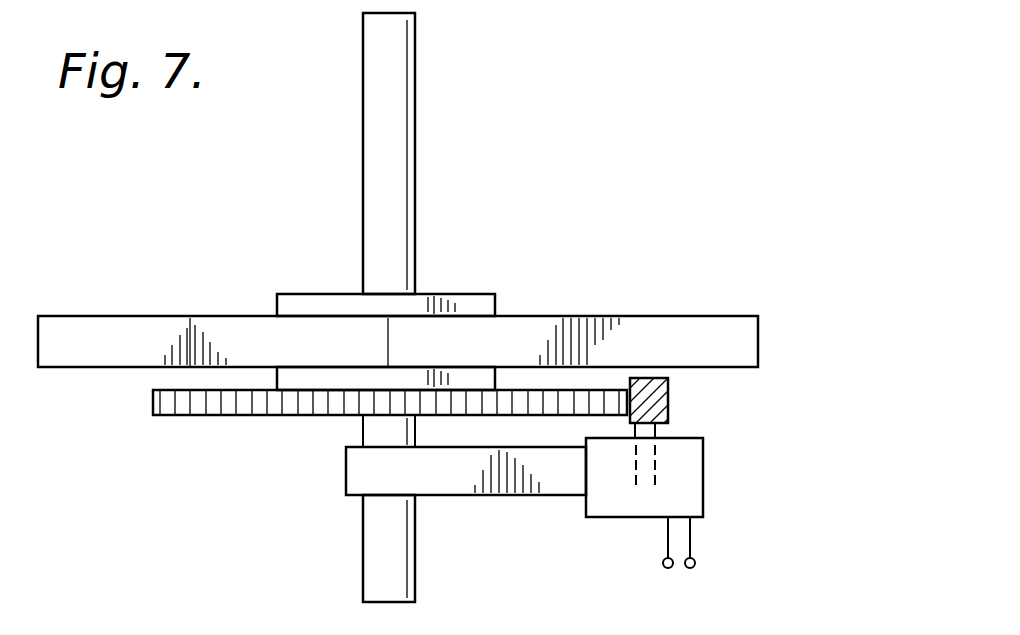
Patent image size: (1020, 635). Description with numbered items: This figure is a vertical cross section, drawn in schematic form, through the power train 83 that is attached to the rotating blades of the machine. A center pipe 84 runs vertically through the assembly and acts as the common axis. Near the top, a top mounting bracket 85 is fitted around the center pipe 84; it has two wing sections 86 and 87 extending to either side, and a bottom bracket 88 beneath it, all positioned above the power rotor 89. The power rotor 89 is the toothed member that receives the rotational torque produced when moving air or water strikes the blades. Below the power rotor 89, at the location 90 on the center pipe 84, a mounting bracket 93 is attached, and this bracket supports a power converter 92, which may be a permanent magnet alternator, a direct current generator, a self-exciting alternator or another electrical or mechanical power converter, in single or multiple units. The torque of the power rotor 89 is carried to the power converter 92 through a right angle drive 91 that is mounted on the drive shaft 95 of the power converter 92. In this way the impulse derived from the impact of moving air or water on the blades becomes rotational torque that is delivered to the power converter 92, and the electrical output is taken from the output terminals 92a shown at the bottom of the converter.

The power train 83 is at (512, 207).
The center pipe 84 is at (382, 146).
The top mounting bracket 85 is at (470, 294).
The wing section 86 is at (125, 325).
The wing section 87 is at (688, 325).
The bottom bracket 88 is at (310, 378).
The power rotor 89 is at (258, 418).
The attachment location 90 is at (355, 475).
The right angle drive 91 is at (668, 400).
The power converter 92 is at (690, 483).
The output terminals 92a is at (703, 563).
The mounting bracket 93 is at (530, 478).
The drive shaft 95 is at (655, 432).